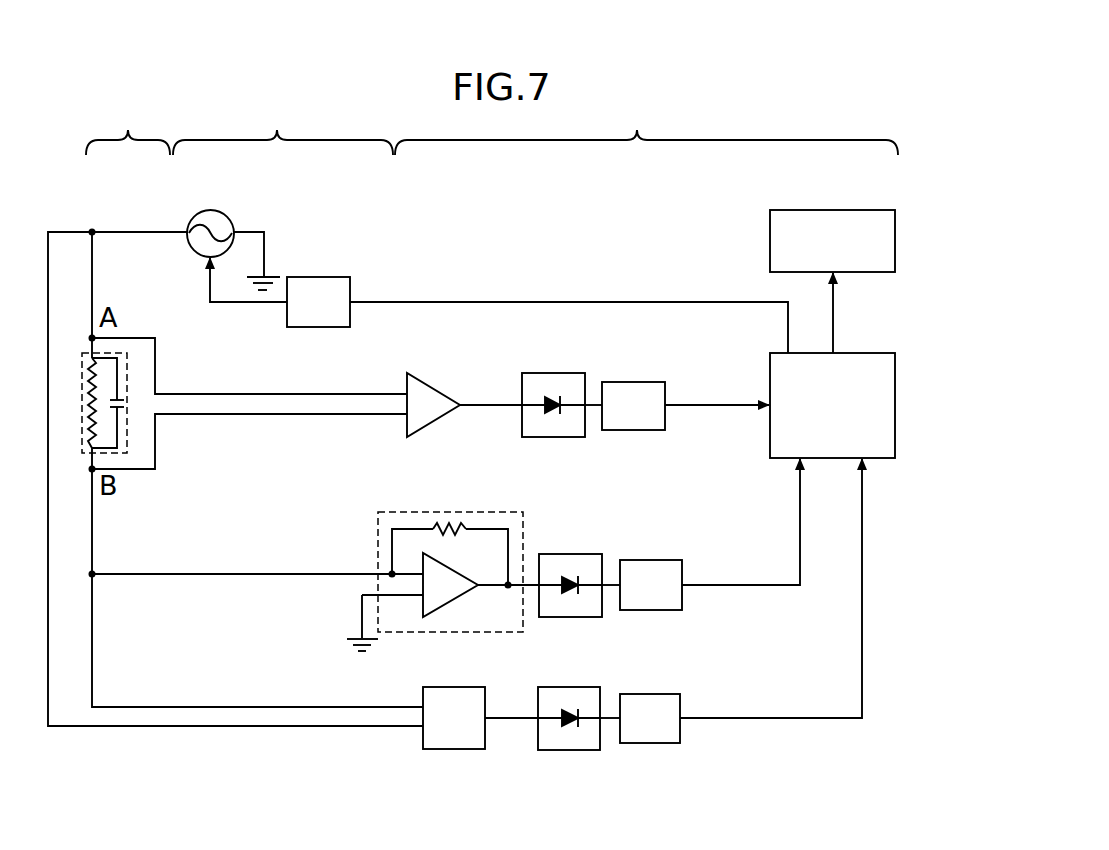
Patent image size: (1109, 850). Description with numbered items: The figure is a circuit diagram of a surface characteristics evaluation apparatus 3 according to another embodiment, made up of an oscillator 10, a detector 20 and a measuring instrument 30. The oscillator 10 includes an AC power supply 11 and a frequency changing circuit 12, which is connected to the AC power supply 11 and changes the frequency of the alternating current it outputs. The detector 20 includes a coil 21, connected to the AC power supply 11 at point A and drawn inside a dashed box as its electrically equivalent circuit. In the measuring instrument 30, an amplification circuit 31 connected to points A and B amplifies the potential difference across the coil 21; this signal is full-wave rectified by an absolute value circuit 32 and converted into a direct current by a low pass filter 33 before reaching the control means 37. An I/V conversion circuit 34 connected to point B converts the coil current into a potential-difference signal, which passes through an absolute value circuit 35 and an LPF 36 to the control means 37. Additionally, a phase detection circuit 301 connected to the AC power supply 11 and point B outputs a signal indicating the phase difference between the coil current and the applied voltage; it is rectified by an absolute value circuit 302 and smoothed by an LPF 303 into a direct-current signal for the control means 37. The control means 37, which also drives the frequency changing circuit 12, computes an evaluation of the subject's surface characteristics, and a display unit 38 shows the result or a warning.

The surface characteristics evaluation apparatus 3 is at (900, 86).
The oscillator 10 is at (283, 128).
The AC power supply 11 is at (231, 219).
The frequency changing circuit 12 is at (338, 277).
The detector 20 is at (128, 128).
The coil 21 is at (127, 372).
The measuring instrument 30 is at (646, 128).
The amplification circuit 31 is at (433, 384).
The absolute value circuit 32 is at (560, 373).
The low pass filter 33 is at (652, 382).
The I/V conversion circuit 34 is at (507, 512).
The absolute value circuit 35 is at (570, 554).
The LPF 36 is at (650, 560).
The control means 37 is at (895, 373).
The display unit 38 is at (895, 220).
The phase detection circuit 301 is at (458, 687).
The absolute value circuit 302 is at (570, 687).
The LPF 303 is at (652, 694).